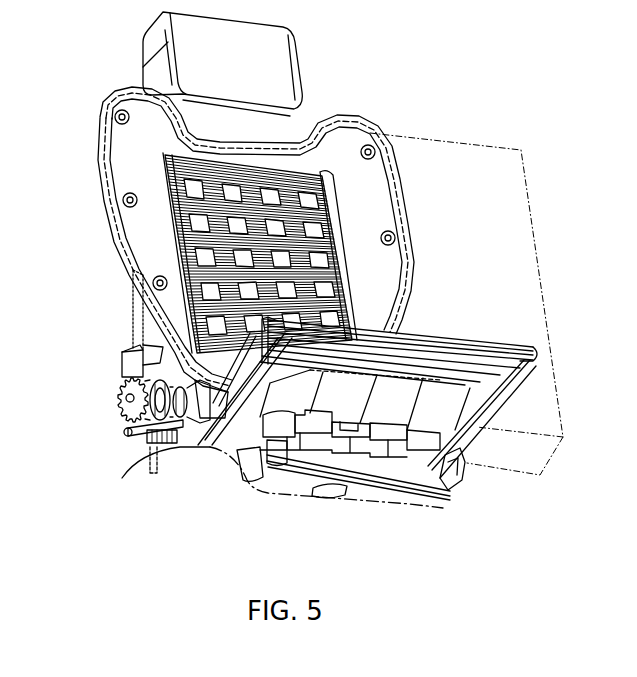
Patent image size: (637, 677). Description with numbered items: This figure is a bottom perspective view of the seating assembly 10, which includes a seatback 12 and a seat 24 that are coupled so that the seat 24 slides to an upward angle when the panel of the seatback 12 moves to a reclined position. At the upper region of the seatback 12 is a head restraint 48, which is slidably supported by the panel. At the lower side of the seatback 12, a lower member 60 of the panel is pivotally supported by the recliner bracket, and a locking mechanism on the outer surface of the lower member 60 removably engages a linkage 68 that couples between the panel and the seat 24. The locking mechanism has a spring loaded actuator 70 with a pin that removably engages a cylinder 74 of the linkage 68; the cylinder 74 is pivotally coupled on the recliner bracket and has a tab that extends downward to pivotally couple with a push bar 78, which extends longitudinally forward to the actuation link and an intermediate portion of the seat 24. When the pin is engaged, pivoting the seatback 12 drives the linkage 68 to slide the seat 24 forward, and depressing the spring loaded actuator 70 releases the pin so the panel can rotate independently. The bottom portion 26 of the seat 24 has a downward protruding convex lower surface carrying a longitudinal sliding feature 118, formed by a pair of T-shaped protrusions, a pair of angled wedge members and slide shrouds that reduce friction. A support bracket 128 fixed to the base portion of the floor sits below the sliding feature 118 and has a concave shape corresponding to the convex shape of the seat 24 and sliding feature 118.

The seating assembly 10 is at (422, 52).
The seatback 12 is at (98, 206).
The seat 24 is at (347, 433).
The bottom portion 26 is at (229, 448).
The head restraint 48 is at (268, 46).
The lower member 60 is at (134, 342).
The linkage 68 is at (133, 385).
The spring loaded actuator 70 is at (121, 362).
The cylinder 74 is at (127, 393).
The push bar 78 is at (130, 438).
The sliding feature 118 is at (266, 478).
The support bracket 128 is at (398, 497).